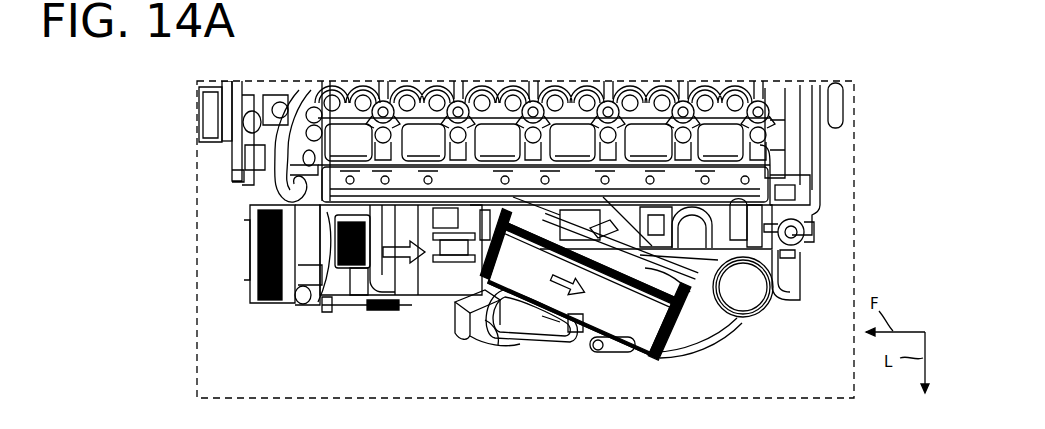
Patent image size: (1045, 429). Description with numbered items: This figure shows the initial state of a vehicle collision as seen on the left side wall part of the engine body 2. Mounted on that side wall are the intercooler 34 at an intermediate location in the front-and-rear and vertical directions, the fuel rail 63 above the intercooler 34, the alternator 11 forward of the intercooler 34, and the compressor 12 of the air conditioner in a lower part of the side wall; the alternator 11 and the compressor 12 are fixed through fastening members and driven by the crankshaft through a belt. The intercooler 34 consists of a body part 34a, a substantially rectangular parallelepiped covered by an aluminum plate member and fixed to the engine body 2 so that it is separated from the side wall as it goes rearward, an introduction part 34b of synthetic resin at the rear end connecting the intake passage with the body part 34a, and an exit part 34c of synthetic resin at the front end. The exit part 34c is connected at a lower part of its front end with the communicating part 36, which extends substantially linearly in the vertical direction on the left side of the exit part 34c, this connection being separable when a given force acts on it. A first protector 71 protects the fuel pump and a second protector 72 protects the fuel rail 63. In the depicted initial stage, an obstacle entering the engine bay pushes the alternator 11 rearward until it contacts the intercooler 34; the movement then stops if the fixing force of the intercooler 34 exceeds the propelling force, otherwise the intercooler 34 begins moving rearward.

The engine body 2 is at (830, 148).
The fuel rail 63 is at (391, 186).
The second protector 72 is at (322, 297).
The compressor 12 is at (320, 302).
The alternator 11 is at (398, 305).
The intercooler 34 is at (660, 348).
The body part 34a is at (577, 334).
The introduction part 34b is at (694, 340).
The exit part 34c is at (480, 270).
The communicating part 36 is at (484, 338).
The first protector 71 is at (723, 268).